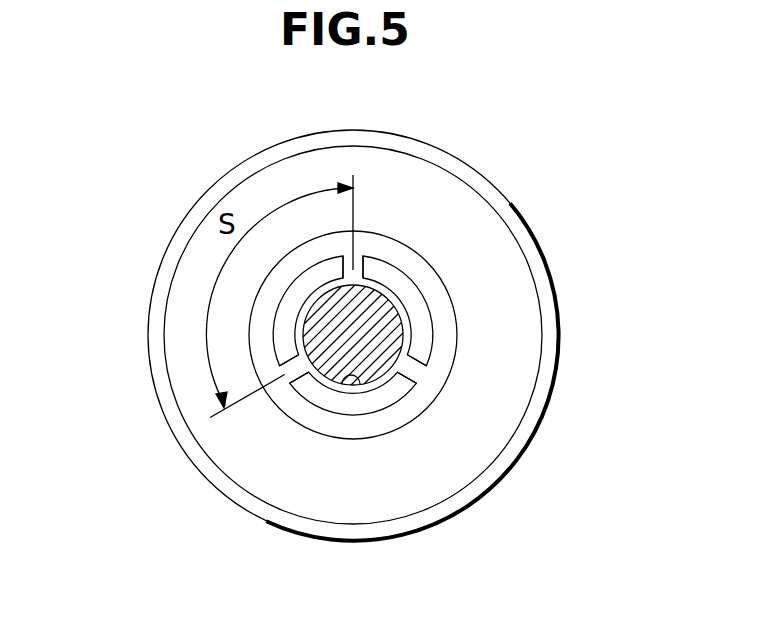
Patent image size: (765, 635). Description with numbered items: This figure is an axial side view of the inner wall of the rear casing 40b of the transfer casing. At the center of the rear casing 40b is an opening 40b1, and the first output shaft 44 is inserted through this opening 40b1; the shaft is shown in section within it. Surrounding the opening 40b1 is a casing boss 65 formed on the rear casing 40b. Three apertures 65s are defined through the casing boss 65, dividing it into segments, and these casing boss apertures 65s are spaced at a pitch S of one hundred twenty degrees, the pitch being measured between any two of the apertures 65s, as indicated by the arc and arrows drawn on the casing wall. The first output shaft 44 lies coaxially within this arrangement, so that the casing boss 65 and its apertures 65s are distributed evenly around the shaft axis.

The rear casing 40b is at (470, 207).
The opening 40b1 is at (354, 384).
The first output shaft 44 is at (378, 362).
The casing boss 65 is at (280, 316).
The casing boss apertures 65s is at (360, 266).